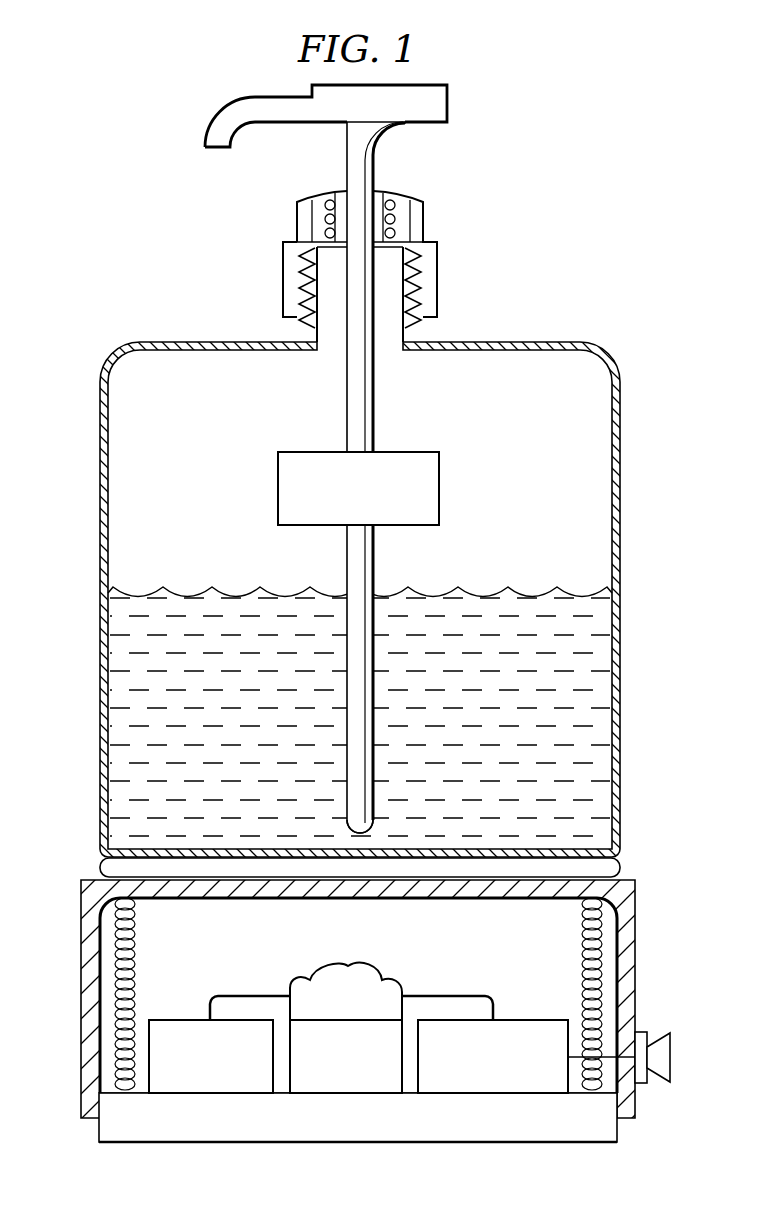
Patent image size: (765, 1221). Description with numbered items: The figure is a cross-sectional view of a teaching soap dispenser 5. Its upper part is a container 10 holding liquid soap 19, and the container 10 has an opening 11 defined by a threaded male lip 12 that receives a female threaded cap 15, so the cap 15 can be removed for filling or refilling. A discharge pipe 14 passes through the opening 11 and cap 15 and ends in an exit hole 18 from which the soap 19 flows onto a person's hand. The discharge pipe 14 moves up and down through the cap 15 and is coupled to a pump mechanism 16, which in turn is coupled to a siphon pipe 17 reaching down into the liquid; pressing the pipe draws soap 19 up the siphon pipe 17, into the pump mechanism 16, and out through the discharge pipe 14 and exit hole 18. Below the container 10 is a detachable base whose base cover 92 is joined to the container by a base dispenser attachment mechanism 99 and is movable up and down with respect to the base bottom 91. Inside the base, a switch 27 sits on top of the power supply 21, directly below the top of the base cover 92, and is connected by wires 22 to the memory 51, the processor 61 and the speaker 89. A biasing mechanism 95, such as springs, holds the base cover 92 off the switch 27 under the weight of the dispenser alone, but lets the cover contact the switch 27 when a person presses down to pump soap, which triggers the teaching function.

The teaching soap dispenser 5 is at (611, 190).
The container 10 is at (100, 487).
The opening 11 is at (326, 341).
The threaded male lip 12 is at (401, 313).
The discharge pipe 14 is at (375, 165).
The cap 15 is at (437, 282).
The pump mechanism 16 is at (278, 488).
The siphon pipe 17 is at (347, 548).
The exit hole 18 is at (214, 150).
The liquid soap 19 is at (532, 597).
The power supply 21 is at (346, 1093).
The wires 22 is at (253, 996).
The switch 27 is at (301, 968).
The memory 51 is at (185, 1020).
The processor 61 is at (525, 1020).
The speaker 89 is at (672, 1068).
The base bottom 91 is at (373, 1143).
The base cover 92 is at (81, 1000).
The biasing mechanism 95 is at (135, 940).
The base dispenser attachment mechanism 99 is at (100, 863).